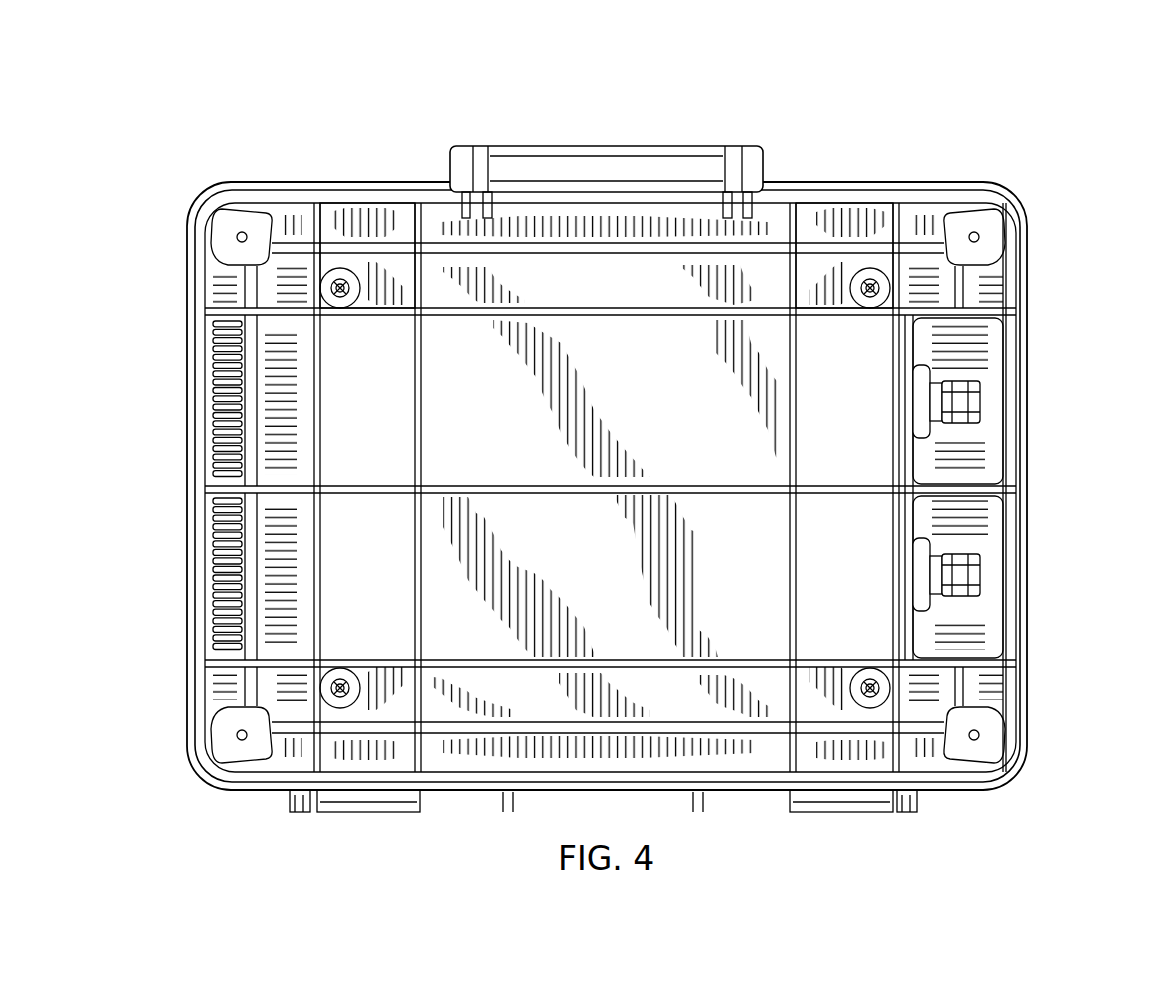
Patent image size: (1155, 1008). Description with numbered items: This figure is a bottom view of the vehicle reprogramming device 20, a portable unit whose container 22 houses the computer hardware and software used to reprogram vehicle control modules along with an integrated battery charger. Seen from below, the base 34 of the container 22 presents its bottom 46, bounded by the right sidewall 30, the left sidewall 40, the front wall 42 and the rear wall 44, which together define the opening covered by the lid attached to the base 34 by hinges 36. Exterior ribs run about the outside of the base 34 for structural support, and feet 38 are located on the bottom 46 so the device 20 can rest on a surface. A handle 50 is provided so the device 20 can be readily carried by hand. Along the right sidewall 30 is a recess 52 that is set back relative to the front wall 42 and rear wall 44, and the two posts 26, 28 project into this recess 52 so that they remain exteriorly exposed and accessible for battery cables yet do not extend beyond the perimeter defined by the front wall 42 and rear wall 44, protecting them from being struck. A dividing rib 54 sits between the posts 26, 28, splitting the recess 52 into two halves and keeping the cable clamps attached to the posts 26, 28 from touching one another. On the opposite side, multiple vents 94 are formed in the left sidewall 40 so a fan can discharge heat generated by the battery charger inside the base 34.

The vehicle reprogramming device 20 is at (118, 113).
The container 22 is at (190, 232).
The post 26 is at (983, 401).
The post 28 is at (983, 578).
The right sidewall 30 is at (1020, 672).
The base 34 is at (858, 213).
The hinge 36 is at (866, 302).
The foot 38 is at (355, 301).
The left sidewall 40 is at (208, 281).
The front wall 42 is at (345, 212).
The rear wall 44 is at (470, 762).
The bottom 46 is at (682, 421).
The handle 50 is at (737, 150).
The recess 52 is at (933, 643).
The dividing rib 54 is at (963, 483).
The vent 94 is at (208, 410).